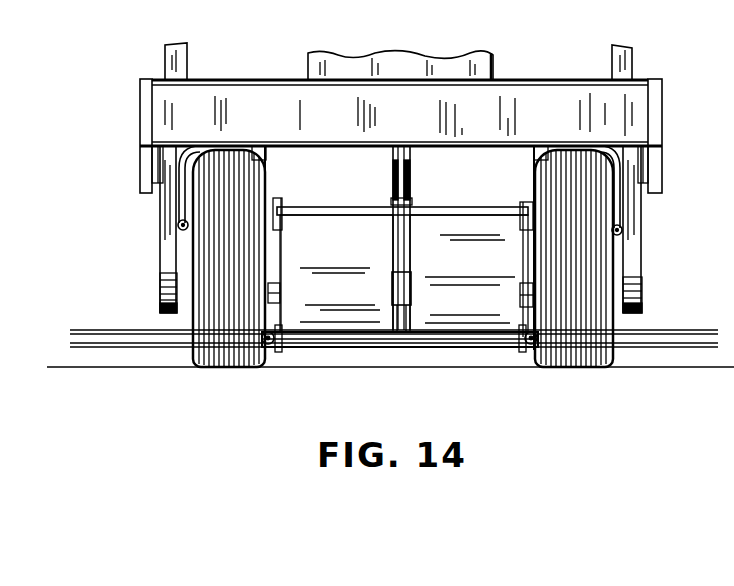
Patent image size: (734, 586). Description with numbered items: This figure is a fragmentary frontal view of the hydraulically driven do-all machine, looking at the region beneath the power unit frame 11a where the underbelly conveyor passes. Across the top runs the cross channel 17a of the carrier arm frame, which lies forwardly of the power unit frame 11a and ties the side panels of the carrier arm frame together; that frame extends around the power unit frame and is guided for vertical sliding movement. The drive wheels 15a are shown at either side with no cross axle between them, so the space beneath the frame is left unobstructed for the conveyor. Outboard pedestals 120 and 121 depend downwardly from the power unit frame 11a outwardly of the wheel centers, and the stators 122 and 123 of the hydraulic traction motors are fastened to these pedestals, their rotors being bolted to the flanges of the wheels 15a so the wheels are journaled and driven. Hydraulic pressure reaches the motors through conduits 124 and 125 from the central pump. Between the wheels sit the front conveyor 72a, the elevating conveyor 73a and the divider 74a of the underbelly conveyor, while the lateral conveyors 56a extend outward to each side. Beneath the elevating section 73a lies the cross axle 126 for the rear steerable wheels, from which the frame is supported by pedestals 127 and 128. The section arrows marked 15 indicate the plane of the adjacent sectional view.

The power unit frame 11a is at (171, 55).
The carrier arm frame cross channel 17a is at (147, 98).
The pedestal 128 is at (259, 153).
The pedestal 127 is at (541, 153).
The elevating conveyor 73a is at (350, 212).
The divider 74a is at (410, 292).
The cross axle 126 is at (532, 287).
The conduit 124 is at (178, 204).
The stator 122 is at (182, 255).
The outboard pedestal 120 is at (168, 287).
The conduit 125 is at (618, 200).
The stator 123 is at (622, 250).
The outboard pedestal 121 is at (636, 287).
The lateral conveyor 56a is at (112, 331).
The drive wheels 15a is at (222, 364).
The front conveyor 72a is at (347, 347).
The section line 15- 15 is at (452, 27).